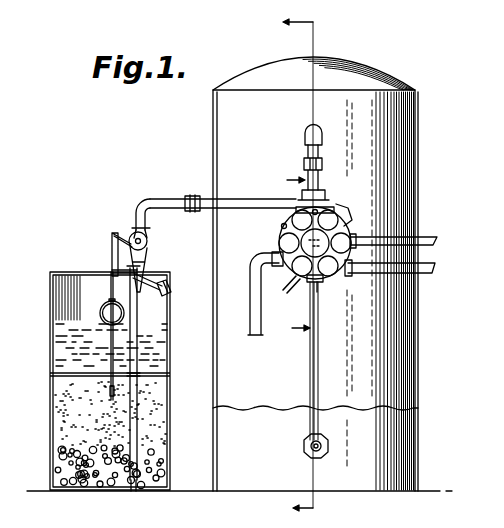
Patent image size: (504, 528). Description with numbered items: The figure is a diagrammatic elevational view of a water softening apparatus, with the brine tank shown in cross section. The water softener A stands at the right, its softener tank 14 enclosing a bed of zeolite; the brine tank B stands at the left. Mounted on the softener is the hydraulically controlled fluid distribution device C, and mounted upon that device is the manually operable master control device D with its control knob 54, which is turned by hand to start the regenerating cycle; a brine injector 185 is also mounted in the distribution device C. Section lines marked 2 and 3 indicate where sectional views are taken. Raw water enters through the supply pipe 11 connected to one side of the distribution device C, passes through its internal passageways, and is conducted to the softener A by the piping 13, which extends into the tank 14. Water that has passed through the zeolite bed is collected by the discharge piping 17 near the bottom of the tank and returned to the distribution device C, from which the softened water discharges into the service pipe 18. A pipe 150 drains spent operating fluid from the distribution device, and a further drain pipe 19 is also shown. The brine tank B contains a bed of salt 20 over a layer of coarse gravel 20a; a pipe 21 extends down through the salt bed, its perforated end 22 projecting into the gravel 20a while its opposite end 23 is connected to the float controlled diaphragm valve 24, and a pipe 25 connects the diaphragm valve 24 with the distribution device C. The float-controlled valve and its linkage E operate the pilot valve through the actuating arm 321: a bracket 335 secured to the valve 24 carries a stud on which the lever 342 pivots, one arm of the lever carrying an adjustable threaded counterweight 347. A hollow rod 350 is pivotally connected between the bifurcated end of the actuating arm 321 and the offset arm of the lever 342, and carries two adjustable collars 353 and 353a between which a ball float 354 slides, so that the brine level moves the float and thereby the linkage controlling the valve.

The water softener A is at (365, 72).
The brine tank B is at (52, 300).
The hydraulically controlled fluid distribution device C is at (324, 285).
The manually operable master control device D is at (340, 236).
The float-controlled valve and associated linkage E is at (146, 240).
The section line 2- 2 is at (289, 266).
The section line 3- 3 is at (291, 254).
The supply pipe 11 is at (433, 237).
The piping 13 is at (320, 157).
The softener tank 14 is at (410, 376).
The discharge piping 17 is at (319, 347).
The service pipe 18 is at (432, 275).
The drain pipe 19 is at (250, 310).
The bed of salt 20 is at (54, 405).
The layer of coarse gravel 20a is at (58, 470).
The pipe 21 is at (140, 356).
The perforated end of pipe 22 is at (134, 491).
The opposite end of piping 23 is at (148, 280).
The float controlled diaphragm valve 24 is at (147, 242).
The pipe 25 is at (167, 199).
The control knob 54 is at (284, 228).
The drain pipe 150 is at (288, 290).
The brine injector 185 is at (344, 208).
The actuating arm 321 is at (134, 214).
The bracket 335 is at (146, 258).
The lever 342 is at (118, 270).
The threaded counterweight 347 is at (169, 293).
The hollow rod 350 is at (112, 241).
The collar 353 is at (110, 299).
The collar 353a is at (110, 389).
The float 354 is at (100, 313).